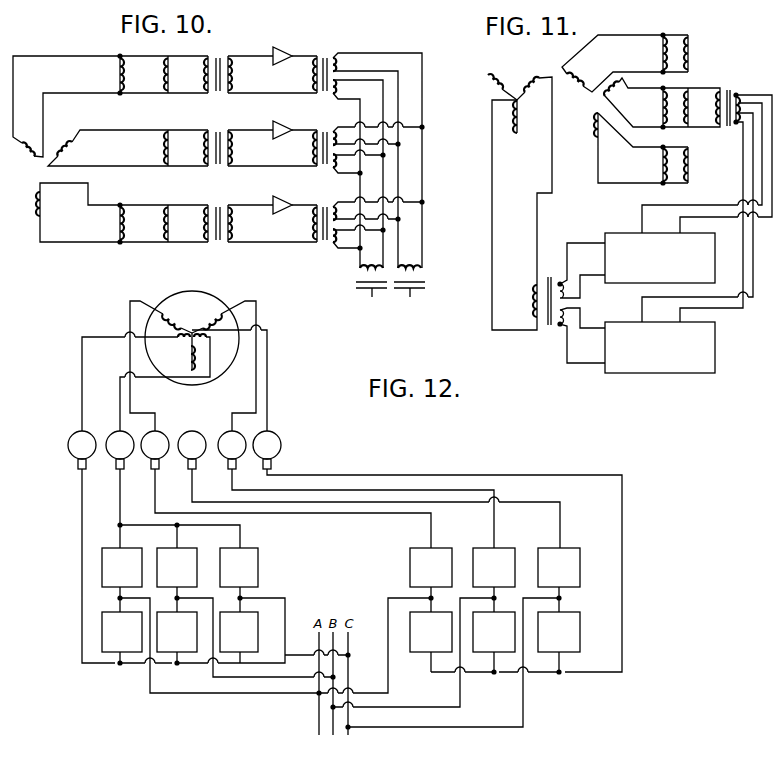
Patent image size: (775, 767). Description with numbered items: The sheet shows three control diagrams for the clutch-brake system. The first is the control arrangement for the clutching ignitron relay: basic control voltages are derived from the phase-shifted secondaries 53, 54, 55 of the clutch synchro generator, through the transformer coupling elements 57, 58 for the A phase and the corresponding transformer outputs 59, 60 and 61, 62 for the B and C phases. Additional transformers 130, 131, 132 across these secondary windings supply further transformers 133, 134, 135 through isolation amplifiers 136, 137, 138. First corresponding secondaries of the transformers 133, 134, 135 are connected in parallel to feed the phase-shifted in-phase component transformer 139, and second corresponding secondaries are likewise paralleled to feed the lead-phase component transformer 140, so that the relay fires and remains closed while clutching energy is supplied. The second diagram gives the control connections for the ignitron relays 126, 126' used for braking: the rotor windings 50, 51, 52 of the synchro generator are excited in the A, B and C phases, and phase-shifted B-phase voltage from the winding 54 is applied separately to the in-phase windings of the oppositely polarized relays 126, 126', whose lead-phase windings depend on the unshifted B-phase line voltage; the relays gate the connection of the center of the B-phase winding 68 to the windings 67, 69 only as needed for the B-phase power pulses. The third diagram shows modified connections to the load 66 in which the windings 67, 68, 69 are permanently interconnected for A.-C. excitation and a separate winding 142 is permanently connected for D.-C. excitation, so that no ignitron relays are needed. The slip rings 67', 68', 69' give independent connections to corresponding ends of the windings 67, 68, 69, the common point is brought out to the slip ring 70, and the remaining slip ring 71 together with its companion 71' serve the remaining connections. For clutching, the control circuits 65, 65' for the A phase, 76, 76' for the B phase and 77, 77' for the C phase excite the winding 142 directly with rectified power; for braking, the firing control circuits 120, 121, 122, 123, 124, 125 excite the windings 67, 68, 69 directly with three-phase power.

In FIG. 11, the rotor winding 50 is at (503, 74).
In FIG. 11, the rotor winding 51 is at (535, 97).
In FIG. 11, the rotor winding 52 is at (519, 135).
In FIG. 10, the secondary winding 53 is at (21, 162).
In FIG. 11, the secondary winding 53 is at (584, 73).
In FIG. 10, the secondary winding 54 is at (75, 150).
In FIG. 11, the secondary winding 54 is at (623, 97).
In FIG. 10, the secondary winding 55 is at (36, 204).
In FIG. 11, the secondary winding 55 is at (596, 140).
In FIG. 10, the transformer coupling element 57 is at (115, 75).
In FIG. 11, the transformer coupling element 57 is at (660, 54).
In FIG. 10, the transformer coupling element 58 is at (164, 75).
In FIG. 11, the transformer coupling element 58 is at (692, 54).
In FIG. 11, the transformer output 59 is at (660, 118).
In FIG. 10, the transformer output 60 is at (164, 150).
In FIG. 11, the transformer output 60 is at (698, 102).
In FIG. 10, the transformer output 61 is at (115, 222).
In FIG. 11, the transformer output 61 is at (660, 164).
In FIG. 10, the transformer output 62 is at (164, 222).
In FIG. 11, the transformer output 62 is at (692, 164).
In FIG. 12, the control circuit 65 is at (115, 556).
In FIG. 12, the control circuit 65' is at (119, 652).
In FIG. 12, the load 66 is at (176, 291).
In FIG. 12, the load winding 67 is at (180, 313).
In FIG. 12, the load winding 68 is at (218, 308).
In FIG. 12, the load winding 69 is at (176, 351).
In FIG. 12, the slip ring 67' is at (163, 442).
In FIG. 12, the slip ring 68' is at (239, 442).
In FIG. 12, the slip ring 69' is at (200, 442).
In FIG. 12, the slip ring 70 is at (280, 437).
In FIG. 12, the slip ring 71 is at (70, 444).
In FIG. 12, the terminal 71' is at (112, 442).
In FIG. 12, the control circuit 76 is at (171, 559).
In FIG. 12, the control circuit 76' is at (176, 652).
In FIG. 12, the control circuit 77 is at (257, 558).
In FIG. 12, the control circuit 77' is at (251, 642).
In FIG. 12, the firing control circuit 120 is at (418, 548).
In FIG. 12, the firing control circuit 121 is at (485, 548).
In FIG. 12, the firing control circuit 122 is at (552, 548).
In FIG. 12, the firing control circuit 123 is at (424, 655).
In FIG. 12, the firing control circuit 124 is at (488, 655).
In FIG. 12, the firing control circuit 125 is at (566, 655).
In FIG. 11, the ignitron relay 126 is at (651, 246).
In FIG. 11, the ignitron relay 126' is at (657, 336).
In FIG. 10, the transformer 130 is at (222, 59).
In FIG. 10, the transformer 131 is at (222, 133).
In FIG. 10, the transformer 132 is at (222, 208).
In FIG. 10, the transformer 133 is at (310, 80).
In FIG. 10, the transformer 134 is at (310, 154).
In FIG. 10, the transformer 135 is at (310, 229).
In FIG. 10, the isolation amplifier 136 is at (284, 49).
In FIG. 10, the isolation amplifier 137 is at (284, 122).
In FIG. 10, the isolation amplifier 138 is at (284, 198).
In FIG. 10, the in-phase component transformer 139 is at (369, 292).
In FIG. 10, the lead-phase component transformer 140 is at (411, 292).
In FIG. 12, the winding 142 is at (178, 335).